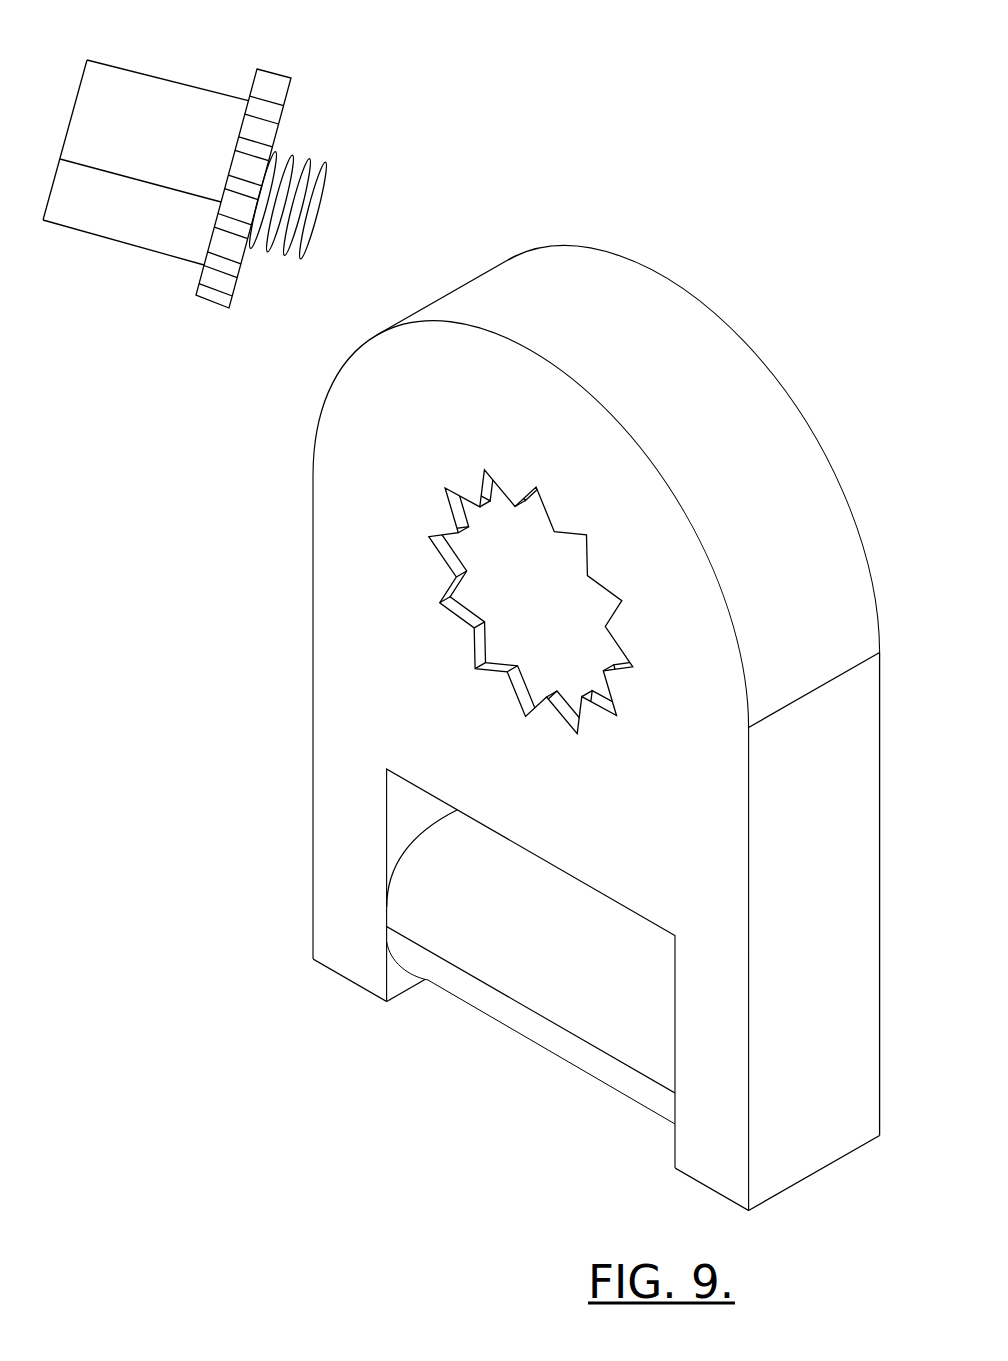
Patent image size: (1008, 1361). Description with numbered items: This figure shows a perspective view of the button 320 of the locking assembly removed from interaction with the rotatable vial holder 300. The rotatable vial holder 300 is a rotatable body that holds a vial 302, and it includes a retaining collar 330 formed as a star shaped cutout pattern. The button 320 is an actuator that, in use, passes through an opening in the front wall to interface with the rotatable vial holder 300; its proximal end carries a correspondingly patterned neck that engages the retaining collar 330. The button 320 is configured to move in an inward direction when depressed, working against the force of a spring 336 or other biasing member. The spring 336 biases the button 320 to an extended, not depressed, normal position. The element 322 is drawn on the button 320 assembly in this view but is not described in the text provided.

The rotatable vial holder 300 is at (540, 698).
The vial 302 is at (531, 968).
The button 320 is at (145, 139).
The toothed gear 322 is at (212, 223).
The retaining collar 330 is at (415, 597).
The spring 336 is at (340, 176).